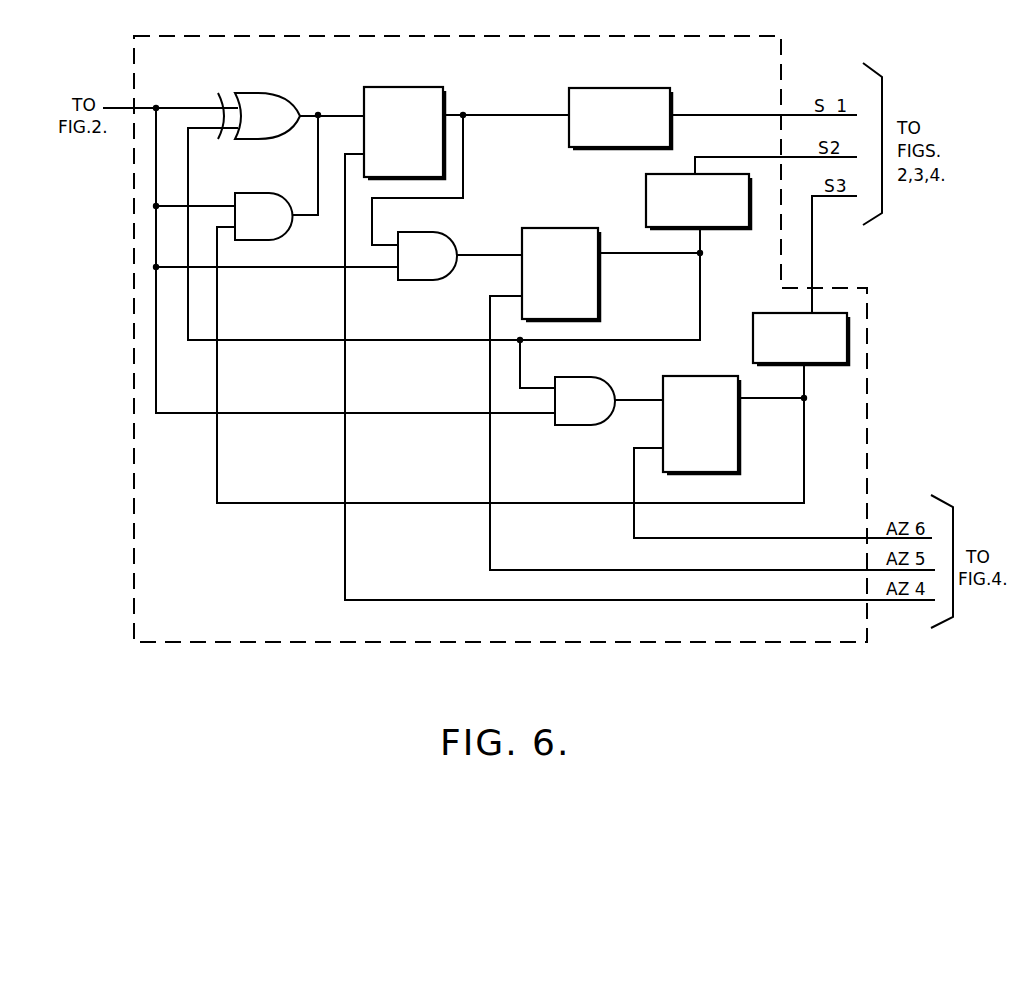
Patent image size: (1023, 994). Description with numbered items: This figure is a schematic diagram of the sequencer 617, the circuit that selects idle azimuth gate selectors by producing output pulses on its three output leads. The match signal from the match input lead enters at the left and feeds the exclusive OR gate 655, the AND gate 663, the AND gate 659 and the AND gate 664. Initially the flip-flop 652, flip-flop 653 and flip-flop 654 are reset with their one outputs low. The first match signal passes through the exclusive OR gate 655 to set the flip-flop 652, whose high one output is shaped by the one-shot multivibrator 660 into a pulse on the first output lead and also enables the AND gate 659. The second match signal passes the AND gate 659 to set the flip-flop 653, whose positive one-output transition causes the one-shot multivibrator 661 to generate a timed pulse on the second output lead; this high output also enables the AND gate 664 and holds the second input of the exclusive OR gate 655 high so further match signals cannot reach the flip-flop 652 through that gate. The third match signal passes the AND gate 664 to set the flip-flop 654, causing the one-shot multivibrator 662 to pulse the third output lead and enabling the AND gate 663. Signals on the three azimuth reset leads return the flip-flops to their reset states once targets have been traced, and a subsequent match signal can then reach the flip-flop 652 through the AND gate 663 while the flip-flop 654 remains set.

The sequencer 617 is at (868, 407).
The exclusive OR gate 655 is at (252, 92).
The AND gate 663 is at (256, 192).
The AND gate 659 is at (422, 236).
The AND gate 664 is at (570, 379).
The flip-flop 652 is at (409, 87).
The flip-flop 653 is at (554, 231).
The flip-flop 654 is at (680, 378).
The one-shot multivibrator 660 is at (628, 88).
The one shot multivibrator 661 is at (672, 173).
The one-shot multivibrator 662 is at (778, 312).